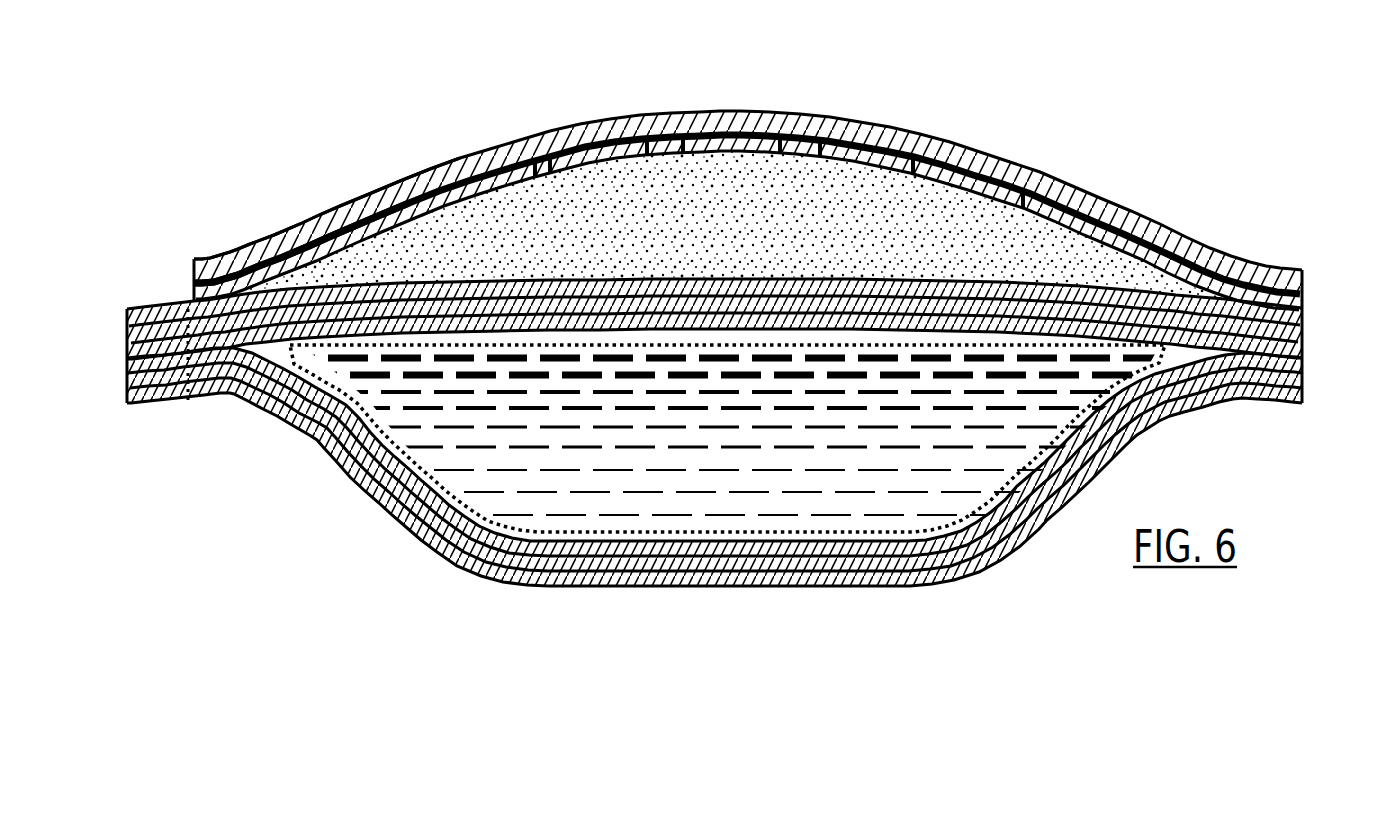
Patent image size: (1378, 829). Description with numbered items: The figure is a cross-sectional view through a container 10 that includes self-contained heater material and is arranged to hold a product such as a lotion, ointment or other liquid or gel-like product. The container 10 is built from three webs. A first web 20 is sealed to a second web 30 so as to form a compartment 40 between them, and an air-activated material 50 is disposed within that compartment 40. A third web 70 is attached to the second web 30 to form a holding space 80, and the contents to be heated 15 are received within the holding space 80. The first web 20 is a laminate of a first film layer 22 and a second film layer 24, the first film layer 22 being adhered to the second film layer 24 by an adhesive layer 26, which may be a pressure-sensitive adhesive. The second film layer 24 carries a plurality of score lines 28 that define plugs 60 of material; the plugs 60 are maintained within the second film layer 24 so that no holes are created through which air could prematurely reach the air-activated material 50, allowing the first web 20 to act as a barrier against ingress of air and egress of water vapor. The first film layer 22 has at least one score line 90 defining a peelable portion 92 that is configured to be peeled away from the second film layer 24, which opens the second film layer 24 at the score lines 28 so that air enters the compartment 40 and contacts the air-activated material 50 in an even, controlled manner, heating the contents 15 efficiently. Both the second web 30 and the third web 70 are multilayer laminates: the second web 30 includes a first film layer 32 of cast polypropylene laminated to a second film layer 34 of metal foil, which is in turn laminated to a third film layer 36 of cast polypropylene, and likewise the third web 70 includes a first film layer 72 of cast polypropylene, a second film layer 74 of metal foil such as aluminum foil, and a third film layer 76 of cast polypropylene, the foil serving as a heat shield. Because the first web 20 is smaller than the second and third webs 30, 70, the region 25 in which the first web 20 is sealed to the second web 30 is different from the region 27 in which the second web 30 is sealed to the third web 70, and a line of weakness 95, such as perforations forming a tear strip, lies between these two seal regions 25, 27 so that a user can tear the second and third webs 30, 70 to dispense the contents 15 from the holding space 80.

The container 10 is at (1153, 128).
The contents to be heated 15 is at (722, 453).
The first web 20 is at (742, 195).
The first film layer 22 is at (1077, 186).
The second film layer 24 is at (1152, 262).
The region 25 is at (215, 255).
The adhesive layer 26 is at (1118, 226).
The region 27 is at (150, 302).
The score lines 28 is at (647, 139).
The second web 30 is at (701, 340).
The first film layer 32 is at (128, 311).
The second film layer 34 is at (128, 331).
The third film layer 36 is at (128, 354).
The compartment 40 is at (952, 214).
The air-activated material 50 is at (731, 184).
The plugs 60 is at (913, 158).
The third web 70 is at (699, 428).
The first film layer 72 is at (128, 368).
The second film layer 74 is at (128, 381).
The third film layer 76 is at (128, 396).
The holding space 80 is at (1034, 479).
The score line 90 is at (284, 234).
The peelable portion 92 is at (360, 178).
The line of weakness 95 is at (188, 396).